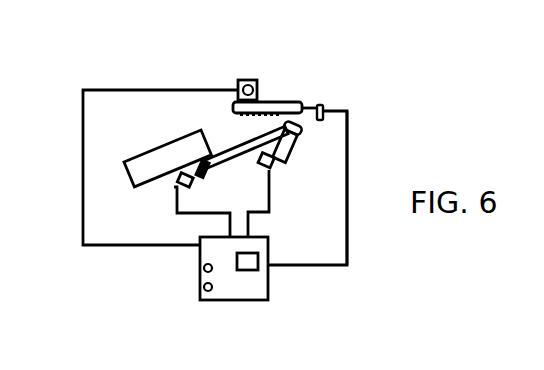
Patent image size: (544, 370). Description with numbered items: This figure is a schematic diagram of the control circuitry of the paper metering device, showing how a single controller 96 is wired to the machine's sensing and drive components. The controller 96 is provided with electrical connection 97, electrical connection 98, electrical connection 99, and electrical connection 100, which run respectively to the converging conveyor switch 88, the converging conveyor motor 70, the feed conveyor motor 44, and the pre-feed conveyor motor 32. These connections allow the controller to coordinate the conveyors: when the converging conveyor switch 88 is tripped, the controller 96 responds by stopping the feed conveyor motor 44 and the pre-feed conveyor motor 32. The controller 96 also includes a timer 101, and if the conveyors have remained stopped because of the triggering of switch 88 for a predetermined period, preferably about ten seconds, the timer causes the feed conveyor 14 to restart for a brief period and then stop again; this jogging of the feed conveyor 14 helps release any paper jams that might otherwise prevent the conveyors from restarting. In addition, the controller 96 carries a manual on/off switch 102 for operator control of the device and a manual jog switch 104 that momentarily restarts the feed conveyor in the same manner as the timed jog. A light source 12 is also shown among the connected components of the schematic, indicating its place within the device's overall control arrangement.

The electrical connection 98 is at (132, 90).
The electrical connection 97 is at (350, 135).
The converging conveyor motor 70 is at (243, 78).
The converging conveyor switch 88 is at (325, 110).
The light source 12 is at (165, 143).
The feed conveyor 14 is at (232, 147).
The feed conveyor motor 44 is at (286, 165).
The pre-feed conveyor motor 32 is at (195, 188).
The electrical connection 100 is at (175, 213).
The electrical connection 99 is at (270, 210).
The controller 96 is at (272, 297).
The timer 101 is at (257, 268).
The manual on/off switch 102 is at (203, 268).
The manual jog switch 104 is at (203, 287).